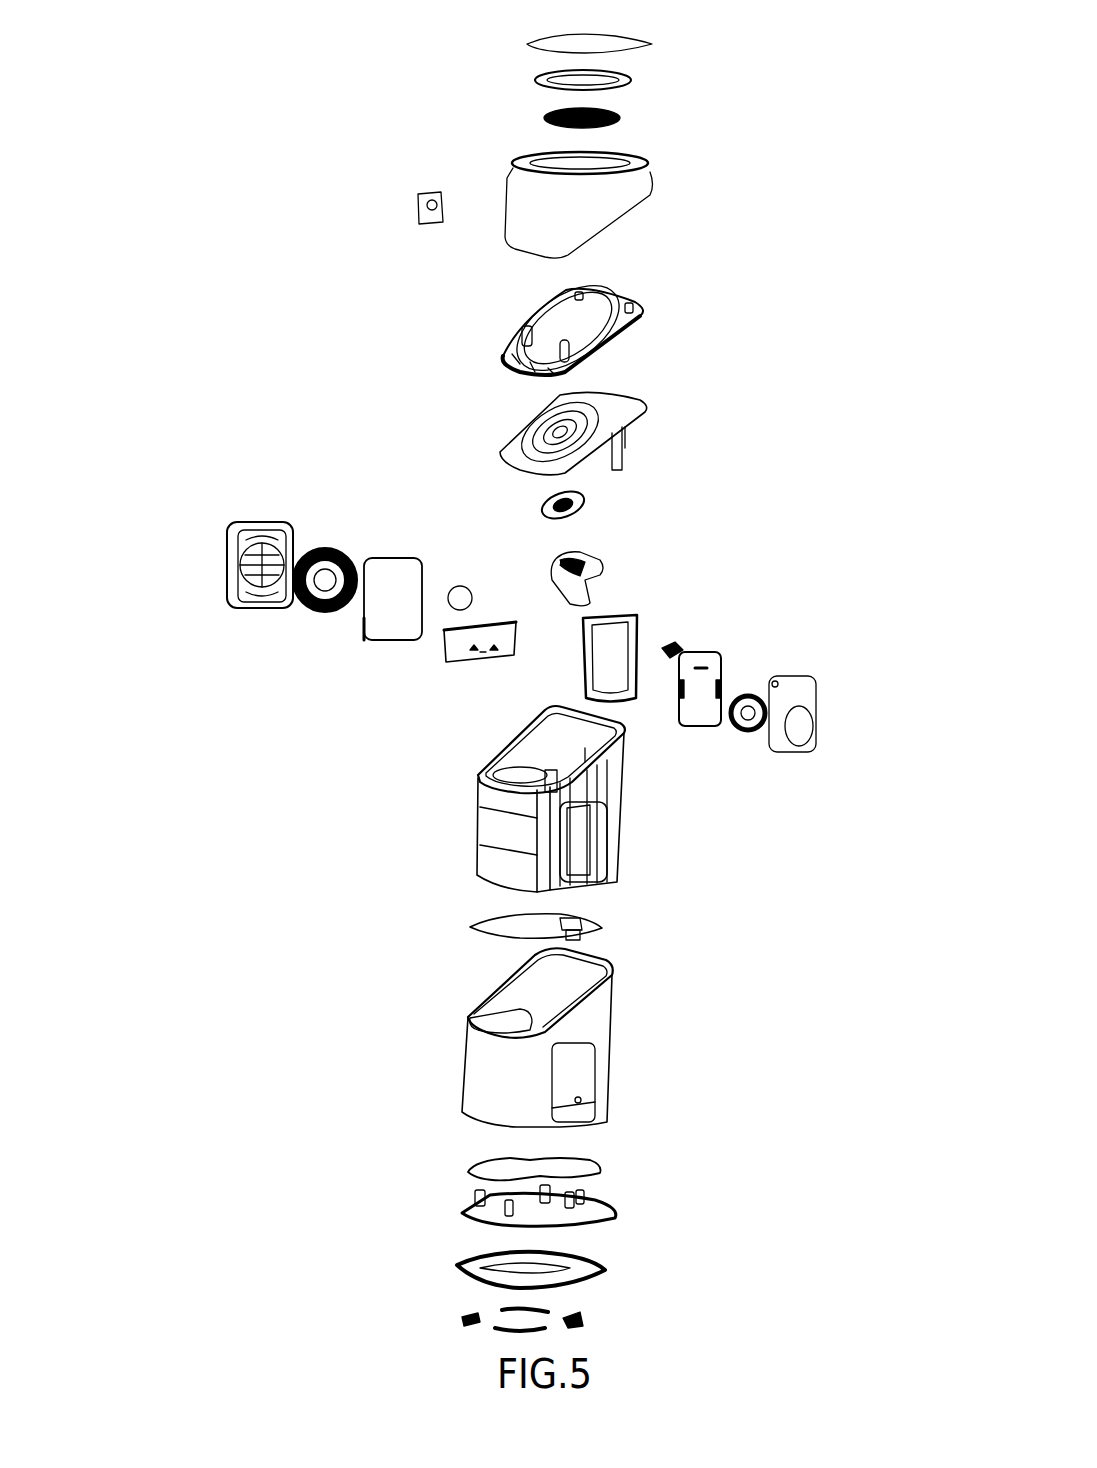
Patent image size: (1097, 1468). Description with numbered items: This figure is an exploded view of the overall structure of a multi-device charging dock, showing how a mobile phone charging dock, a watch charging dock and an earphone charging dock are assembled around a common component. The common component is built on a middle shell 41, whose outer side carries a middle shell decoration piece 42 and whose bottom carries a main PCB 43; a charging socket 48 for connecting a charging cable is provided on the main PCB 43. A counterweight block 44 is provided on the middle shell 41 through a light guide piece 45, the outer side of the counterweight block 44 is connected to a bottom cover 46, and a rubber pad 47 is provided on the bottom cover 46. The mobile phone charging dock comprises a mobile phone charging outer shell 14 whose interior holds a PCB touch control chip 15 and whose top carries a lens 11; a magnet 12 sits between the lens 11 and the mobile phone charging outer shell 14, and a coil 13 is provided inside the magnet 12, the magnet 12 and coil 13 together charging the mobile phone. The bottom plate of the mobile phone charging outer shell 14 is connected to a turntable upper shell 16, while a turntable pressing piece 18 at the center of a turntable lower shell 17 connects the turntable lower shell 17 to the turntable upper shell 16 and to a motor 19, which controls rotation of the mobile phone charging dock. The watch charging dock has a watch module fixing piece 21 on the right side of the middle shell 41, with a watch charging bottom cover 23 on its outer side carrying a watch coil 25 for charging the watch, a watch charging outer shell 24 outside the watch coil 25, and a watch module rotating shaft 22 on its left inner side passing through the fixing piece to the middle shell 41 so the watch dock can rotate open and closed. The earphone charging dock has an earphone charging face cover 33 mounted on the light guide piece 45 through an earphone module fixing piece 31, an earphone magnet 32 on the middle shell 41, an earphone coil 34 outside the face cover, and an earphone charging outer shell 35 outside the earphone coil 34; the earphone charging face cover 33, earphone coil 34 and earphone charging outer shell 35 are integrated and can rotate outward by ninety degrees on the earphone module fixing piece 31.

The lens 11 is at (660, 44).
The magnet 12 is at (634, 85).
The coil 13 is at (622, 122).
The mobile phone charging outer shell 14 is at (652, 199).
The PCB touch control chip 15 is at (416, 205).
The turntable upper shell 16 is at (657, 312).
The turntable lower shell 17 is at (648, 412).
The turntable pressing piece 18 is at (592, 503).
The motor 19 is at (612, 566).
The watch module fixing piece 21 is at (578, 660).
The watch module rotating shaft 22 is at (682, 642).
The watch charging bottom cover 23 is at (724, 660).
The watch charging outer shell 24 is at (818, 708).
The watch coil 25 is at (752, 730).
The earphone module fixing piece 31 is at (455, 665).
The earphone magnet 32 is at (457, 582).
The earphone charging face cover 33 is at (358, 634).
The earphone coil 34 is at (320, 545).
The earphone charging outer shell 35 is at (222, 566).
The middle shell 41 is at (623, 842).
The middle shell decoration piece 42 is at (612, 1063).
The main PCB 43 is at (468, 927).
The counterweight block 44 is at (605, 1170).
The light guide piece 45 is at (620, 1217).
The bottom cover 46 is at (615, 1272).
The rubber pad 47 is at (598, 1325).
The charging socket 48 is at (580, 935).